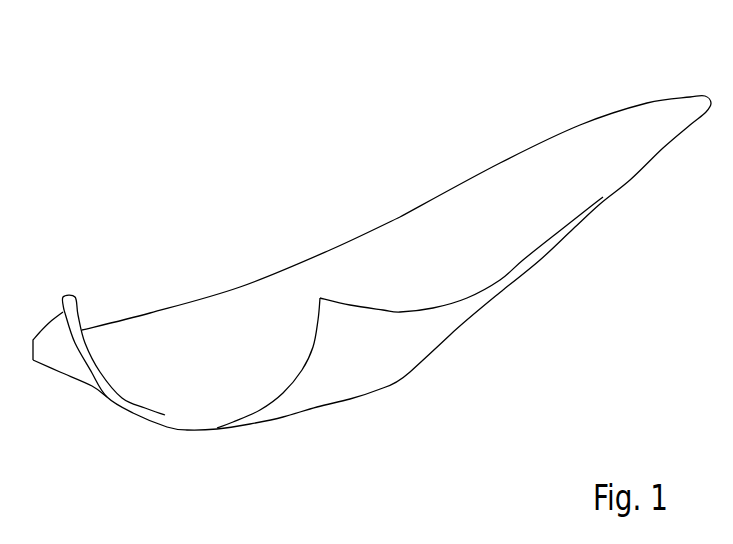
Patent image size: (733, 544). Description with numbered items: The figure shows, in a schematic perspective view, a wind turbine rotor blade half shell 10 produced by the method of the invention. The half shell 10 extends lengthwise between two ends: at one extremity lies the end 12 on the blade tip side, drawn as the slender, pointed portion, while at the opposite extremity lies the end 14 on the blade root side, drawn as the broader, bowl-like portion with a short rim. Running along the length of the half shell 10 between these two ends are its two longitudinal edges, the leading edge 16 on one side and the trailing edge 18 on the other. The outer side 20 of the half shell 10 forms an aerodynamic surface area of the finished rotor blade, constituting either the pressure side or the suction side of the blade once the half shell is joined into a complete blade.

The wind turbine rotor blade half shell 10 is at (293, 190).
The end on the blade tip side 12 is at (643, 118).
The end on the blade root side 14 is at (188, 413).
The leading edge 16 is at (480, 293).
The trailing edge 18 is at (197, 302).
The outer side 20 is at (347, 383).